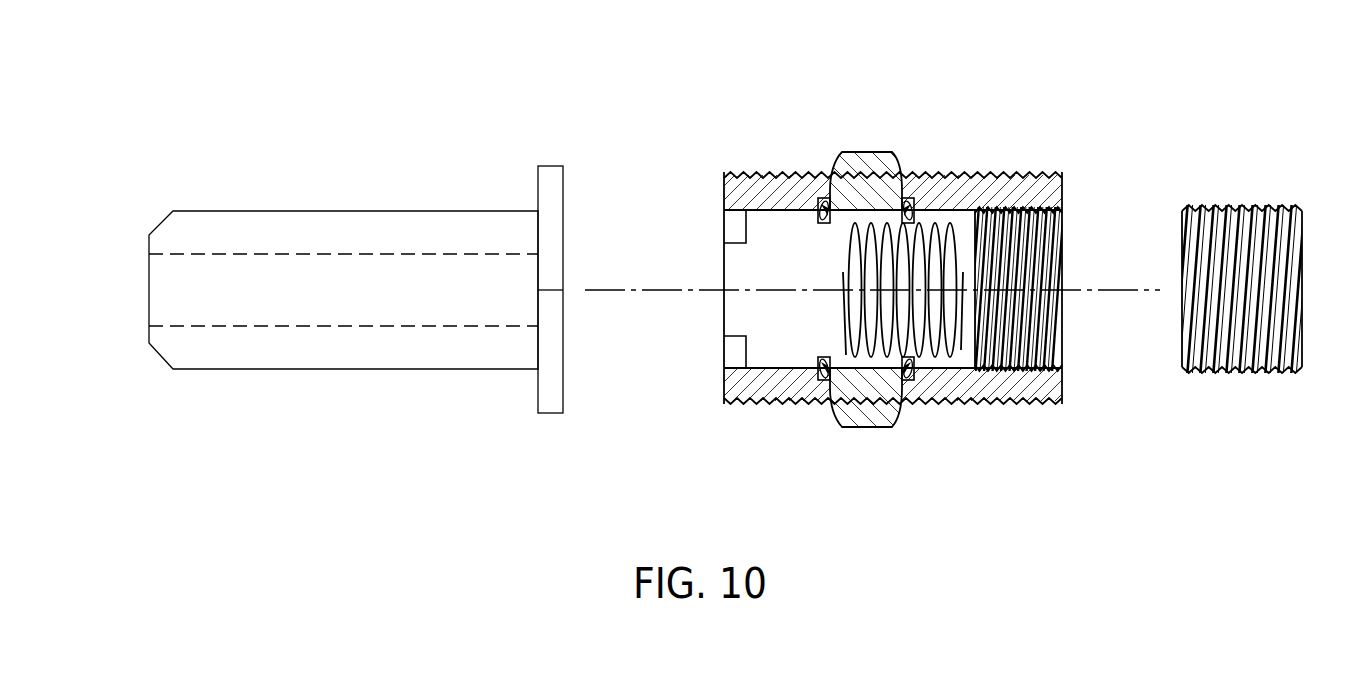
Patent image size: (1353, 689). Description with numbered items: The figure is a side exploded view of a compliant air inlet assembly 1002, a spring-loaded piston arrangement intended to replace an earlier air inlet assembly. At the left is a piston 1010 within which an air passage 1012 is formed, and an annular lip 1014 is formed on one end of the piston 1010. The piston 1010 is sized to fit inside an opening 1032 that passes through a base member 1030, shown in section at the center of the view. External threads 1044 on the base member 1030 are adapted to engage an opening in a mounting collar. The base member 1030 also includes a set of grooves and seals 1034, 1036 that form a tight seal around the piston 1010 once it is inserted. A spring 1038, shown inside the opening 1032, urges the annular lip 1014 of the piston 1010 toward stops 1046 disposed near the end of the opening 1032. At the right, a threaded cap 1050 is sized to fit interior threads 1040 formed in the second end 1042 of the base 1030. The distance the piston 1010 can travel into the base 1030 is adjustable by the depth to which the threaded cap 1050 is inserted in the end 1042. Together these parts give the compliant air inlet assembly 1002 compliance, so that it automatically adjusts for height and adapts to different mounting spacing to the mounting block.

The compliant air inlet assembly 1002 is at (854, 251).
The piston 1010 is at (316, 210).
The air passage 1012 is at (361, 318).
The annular lip 1014 is at (556, 412).
The base member 1030 is at (868, 152).
The opening 1032 is at (867, 318).
The groove and seal 1034 is at (825, 380).
The groove and seal 1036 is at (908, 380).
The spring 1038 is at (965, 230).
The interior threads 1040 is at (1040, 365).
The second end 1042 is at (1062, 248).
The external threads 1044 is at (1015, 405).
The stops 1046 is at (730, 353).
The threaded cap 1050 is at (1240, 205).